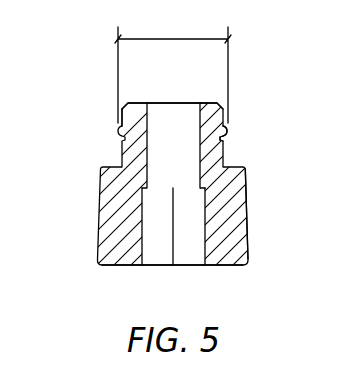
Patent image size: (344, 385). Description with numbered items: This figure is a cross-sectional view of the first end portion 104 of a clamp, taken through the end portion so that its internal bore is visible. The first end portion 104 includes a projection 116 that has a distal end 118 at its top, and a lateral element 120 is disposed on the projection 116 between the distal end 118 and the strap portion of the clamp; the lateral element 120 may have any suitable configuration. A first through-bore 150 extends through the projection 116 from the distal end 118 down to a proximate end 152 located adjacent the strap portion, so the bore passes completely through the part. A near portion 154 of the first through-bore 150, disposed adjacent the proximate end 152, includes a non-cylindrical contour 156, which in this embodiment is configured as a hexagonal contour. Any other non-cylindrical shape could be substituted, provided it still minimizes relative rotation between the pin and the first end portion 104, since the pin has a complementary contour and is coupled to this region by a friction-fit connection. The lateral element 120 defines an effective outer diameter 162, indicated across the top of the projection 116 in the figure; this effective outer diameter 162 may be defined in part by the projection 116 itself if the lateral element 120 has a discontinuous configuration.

The first end portion 104 is at (88, 210).
The projection 116 is at (238, 120).
The distal end 118 is at (135, 117).
The lateral element 120 is at (227, 131).
The first through-bore 150 is at (182, 98).
The proximate end 152 is at (220, 266).
The near portion 154 is at (207, 236).
The non-cylindrical contour 156 is at (155, 262).
The effective outer diameter 162 is at (174, 38).